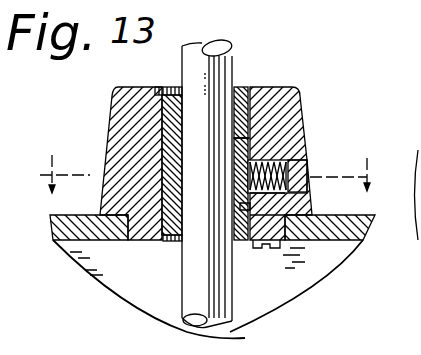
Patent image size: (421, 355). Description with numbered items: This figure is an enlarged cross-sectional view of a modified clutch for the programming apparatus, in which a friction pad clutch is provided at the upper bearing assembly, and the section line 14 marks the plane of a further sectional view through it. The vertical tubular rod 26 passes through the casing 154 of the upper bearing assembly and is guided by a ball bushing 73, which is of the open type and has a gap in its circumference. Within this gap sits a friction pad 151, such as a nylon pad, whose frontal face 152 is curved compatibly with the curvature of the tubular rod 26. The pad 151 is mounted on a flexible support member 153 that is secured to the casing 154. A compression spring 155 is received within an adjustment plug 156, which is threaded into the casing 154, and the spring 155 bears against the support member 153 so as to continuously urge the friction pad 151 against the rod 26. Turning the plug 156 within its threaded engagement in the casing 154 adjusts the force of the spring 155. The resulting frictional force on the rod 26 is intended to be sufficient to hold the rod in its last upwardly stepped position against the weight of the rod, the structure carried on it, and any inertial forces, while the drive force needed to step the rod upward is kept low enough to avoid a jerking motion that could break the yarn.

The section line 14- 14 is at (209, 174).
The tubular rod 26 is at (190, 282).
The ball bushing 73 is at (239, 102).
The friction pad 151 is at (248, 152).
The frontal face 152 is at (230, 198).
The flexible support member 153 is at (235, 242).
The casing 154 is at (111, 108).
The compression spring 155 is at (305, 160).
The adjustment plug 156 is at (306, 182).